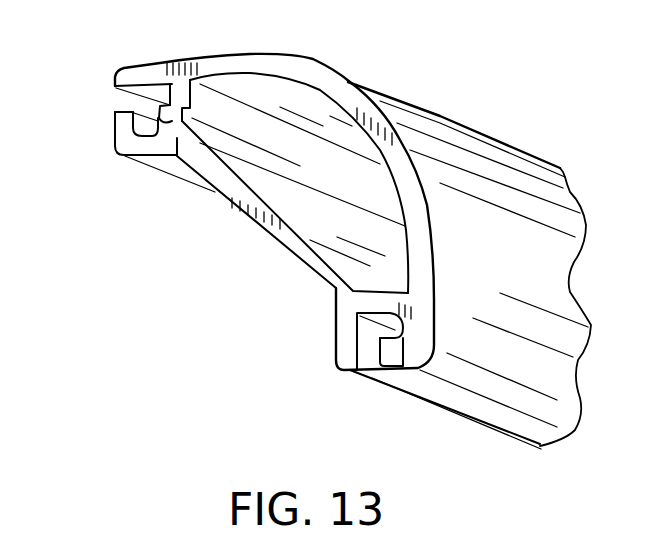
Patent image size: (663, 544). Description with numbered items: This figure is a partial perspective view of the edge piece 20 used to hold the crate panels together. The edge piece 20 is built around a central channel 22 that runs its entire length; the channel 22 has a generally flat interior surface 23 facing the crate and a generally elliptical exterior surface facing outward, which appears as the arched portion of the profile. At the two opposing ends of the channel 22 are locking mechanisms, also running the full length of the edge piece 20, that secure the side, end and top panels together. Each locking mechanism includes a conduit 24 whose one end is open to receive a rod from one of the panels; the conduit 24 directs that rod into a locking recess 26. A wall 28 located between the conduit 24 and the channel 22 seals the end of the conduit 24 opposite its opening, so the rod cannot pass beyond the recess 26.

The edge piece 20 is at (493, 152).
The central channel 22 is at (312, 112).
The interior surface 23 is at (333, 232).
The conduit 24 is at (127, 103).
The locking recess 26 is at (143, 131).
The wall 28 is at (162, 97).